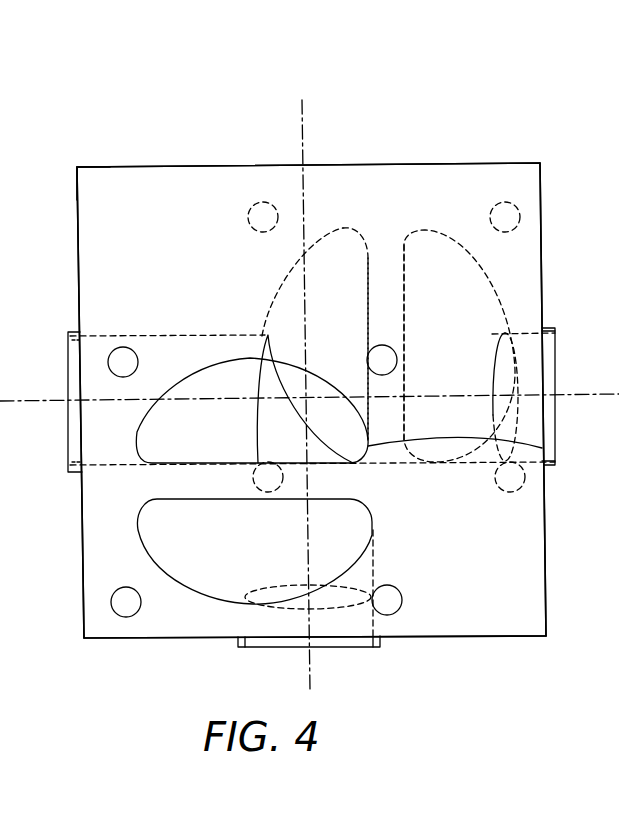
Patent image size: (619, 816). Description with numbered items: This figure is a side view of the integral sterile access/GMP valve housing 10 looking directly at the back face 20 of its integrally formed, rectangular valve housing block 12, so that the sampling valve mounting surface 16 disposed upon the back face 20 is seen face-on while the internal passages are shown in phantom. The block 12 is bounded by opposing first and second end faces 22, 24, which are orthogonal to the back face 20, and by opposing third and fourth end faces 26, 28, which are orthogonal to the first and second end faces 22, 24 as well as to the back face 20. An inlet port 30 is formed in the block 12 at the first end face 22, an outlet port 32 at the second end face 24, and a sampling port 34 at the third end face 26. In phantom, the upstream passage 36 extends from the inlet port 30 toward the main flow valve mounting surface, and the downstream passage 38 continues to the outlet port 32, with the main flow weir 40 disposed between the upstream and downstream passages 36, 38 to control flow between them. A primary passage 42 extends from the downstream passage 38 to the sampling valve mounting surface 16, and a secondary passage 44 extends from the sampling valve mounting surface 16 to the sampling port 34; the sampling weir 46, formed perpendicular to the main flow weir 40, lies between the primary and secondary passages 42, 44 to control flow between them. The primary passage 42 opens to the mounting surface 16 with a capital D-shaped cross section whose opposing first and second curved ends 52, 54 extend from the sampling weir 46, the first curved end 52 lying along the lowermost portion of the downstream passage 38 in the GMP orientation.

The valve housing 10 is at (128, 114).
The valve housing block 12 is at (97, 166).
The sampling valve mounting surface 16 is at (167, 612).
The back face 20 is at (95, 200).
The first end face 22 is at (542, 245).
The second end face 24 is at (78, 251).
The third end face 26 is at (447, 637).
The fourth end face 28 is at (186, 166).
The inlet port 30 is at (547, 328).
The outlet port 32 is at (70, 332).
The sampling port 34 is at (237, 646).
The upstream passage 36 is at (327, 268).
The downstream passage 38 is at (437, 277).
The main flow weir 40 is at (379, 287).
The primary passage 42 is at (183, 449).
The secondary passage 44 is at (171, 528).
The sampling weir 46 is at (175, 484).
The first curved end 52 is at (542, 448).
The second curved end 54 is at (357, 230).